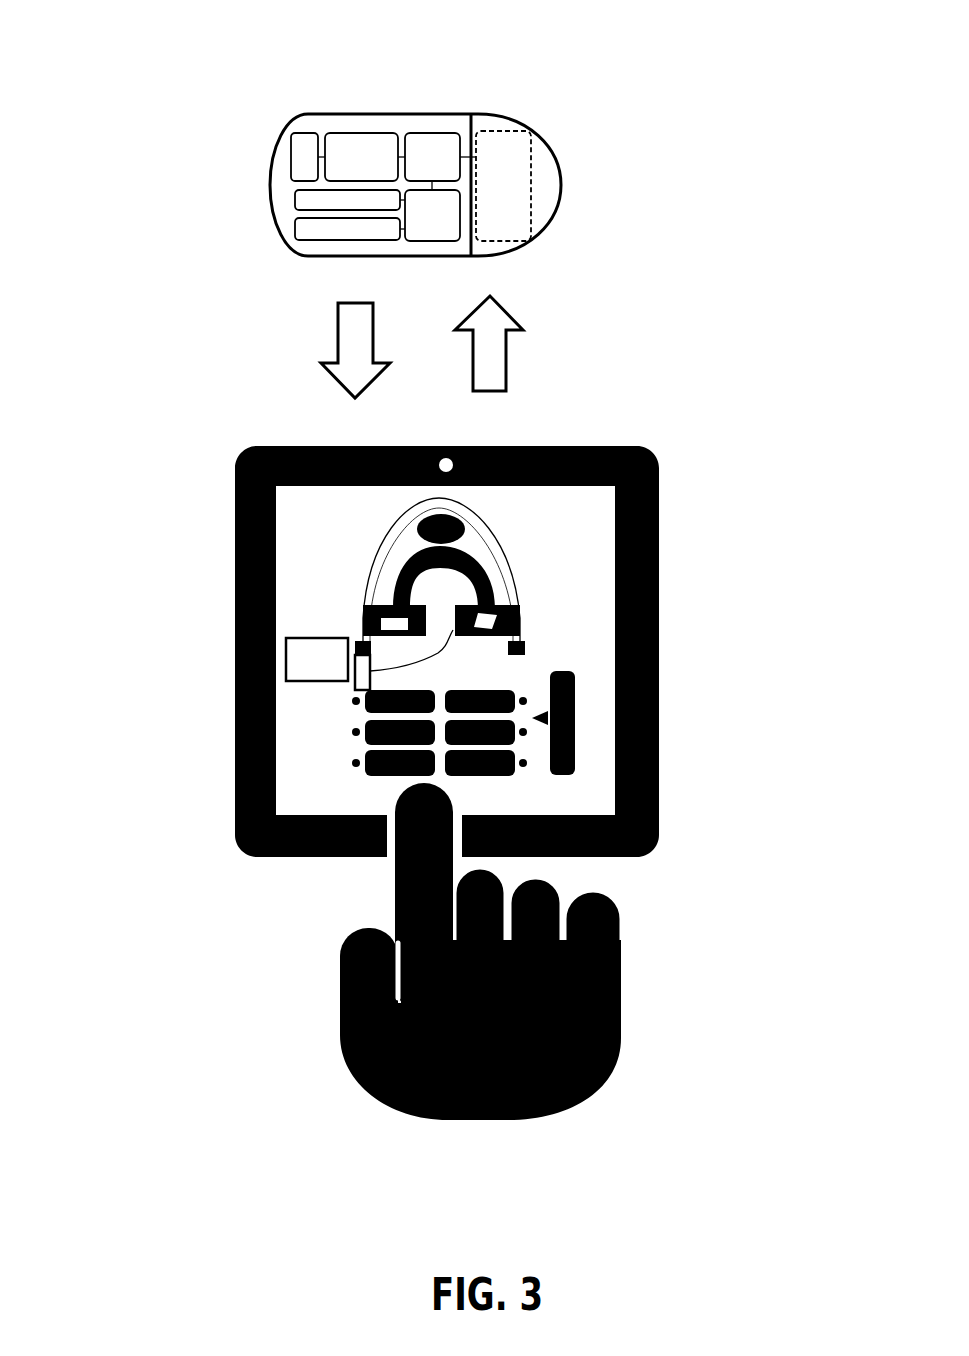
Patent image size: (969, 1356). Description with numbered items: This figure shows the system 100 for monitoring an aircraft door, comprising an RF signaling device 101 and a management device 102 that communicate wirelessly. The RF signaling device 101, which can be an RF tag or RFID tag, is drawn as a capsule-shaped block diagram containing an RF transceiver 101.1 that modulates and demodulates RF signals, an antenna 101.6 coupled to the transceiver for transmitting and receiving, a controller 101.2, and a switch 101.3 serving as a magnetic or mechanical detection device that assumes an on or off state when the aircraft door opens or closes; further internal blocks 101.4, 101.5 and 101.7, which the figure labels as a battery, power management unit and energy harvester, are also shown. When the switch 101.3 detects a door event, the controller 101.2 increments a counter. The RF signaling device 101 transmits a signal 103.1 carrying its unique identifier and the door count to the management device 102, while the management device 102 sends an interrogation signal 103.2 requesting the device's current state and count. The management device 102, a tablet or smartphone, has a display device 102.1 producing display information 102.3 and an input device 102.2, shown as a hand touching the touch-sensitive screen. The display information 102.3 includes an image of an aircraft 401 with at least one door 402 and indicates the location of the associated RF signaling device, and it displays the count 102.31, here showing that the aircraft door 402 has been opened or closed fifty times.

The system 100 is at (56, 57).
The RF signaling device 101 is at (346, 185).
The RF transceiver 101.1 is at (361, 157).
The controller 101.2 is at (432, 157).
The switch 101.3 is at (503, 186).
The battery 101.4 is at (347, 200).
The power management unit 101.5 is at (432, 215).
The antenna 101.6 is at (299, 157).
The energy harvester 101.7 is at (347, 229).
The management device 102 is at (228, 486).
The display device 102.1 is at (303, 578).
The input device 102.2 is at (380, 783).
The display information 102.3 is at (463, 637).
The count 102.31 is at (278, 654).
The signal 103.1 is at (337, 331).
The signal 103.2 is at (500, 333).
The aircraft 401 is at (485, 543).
The aircraft door 402 is at (505, 606).